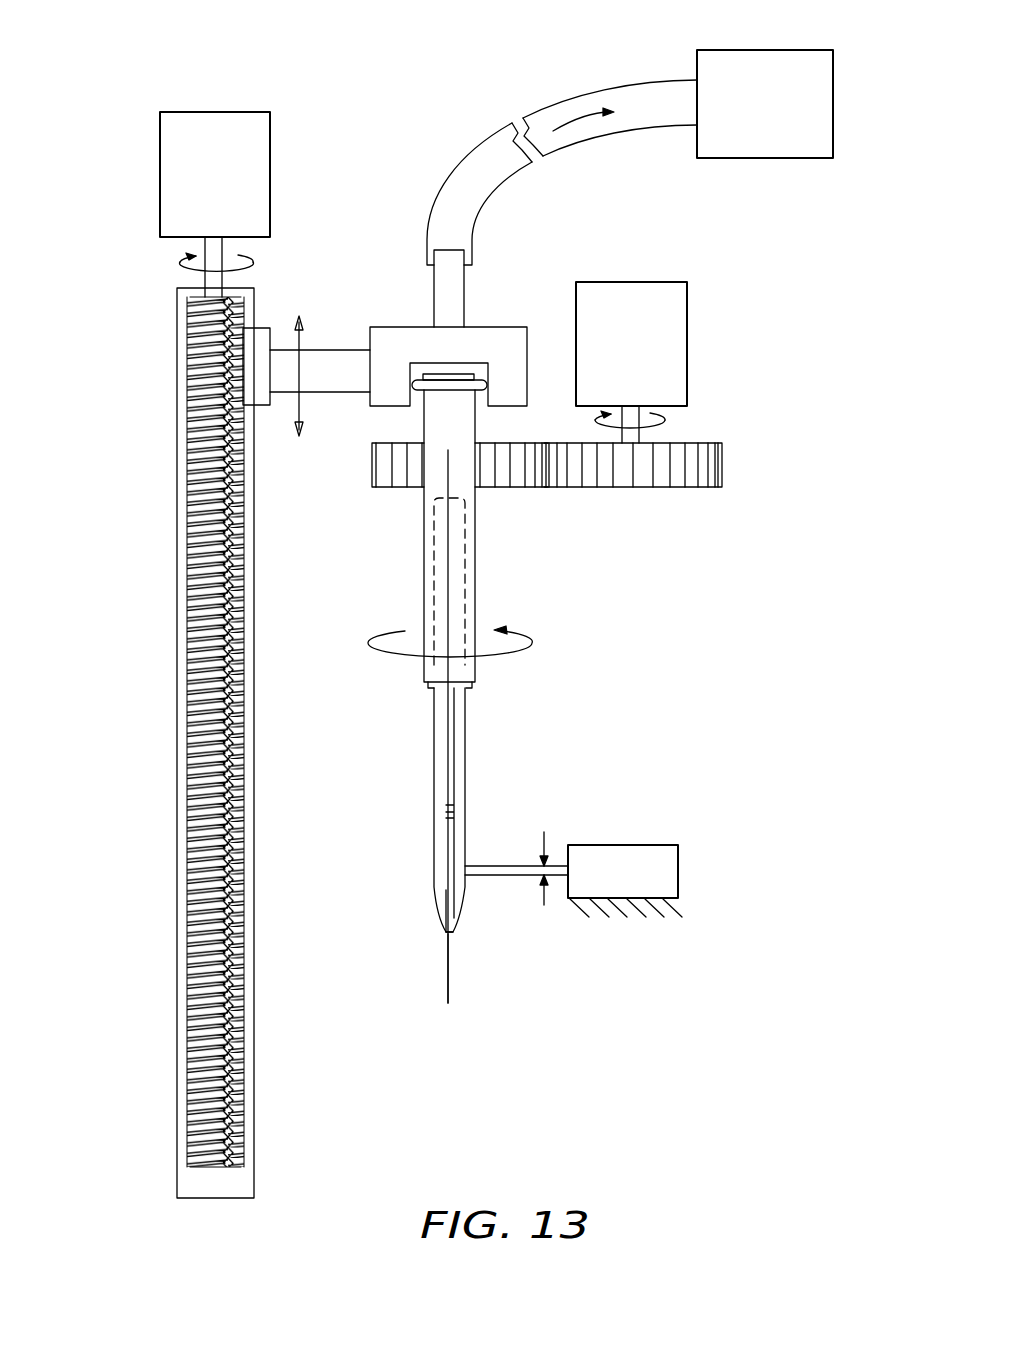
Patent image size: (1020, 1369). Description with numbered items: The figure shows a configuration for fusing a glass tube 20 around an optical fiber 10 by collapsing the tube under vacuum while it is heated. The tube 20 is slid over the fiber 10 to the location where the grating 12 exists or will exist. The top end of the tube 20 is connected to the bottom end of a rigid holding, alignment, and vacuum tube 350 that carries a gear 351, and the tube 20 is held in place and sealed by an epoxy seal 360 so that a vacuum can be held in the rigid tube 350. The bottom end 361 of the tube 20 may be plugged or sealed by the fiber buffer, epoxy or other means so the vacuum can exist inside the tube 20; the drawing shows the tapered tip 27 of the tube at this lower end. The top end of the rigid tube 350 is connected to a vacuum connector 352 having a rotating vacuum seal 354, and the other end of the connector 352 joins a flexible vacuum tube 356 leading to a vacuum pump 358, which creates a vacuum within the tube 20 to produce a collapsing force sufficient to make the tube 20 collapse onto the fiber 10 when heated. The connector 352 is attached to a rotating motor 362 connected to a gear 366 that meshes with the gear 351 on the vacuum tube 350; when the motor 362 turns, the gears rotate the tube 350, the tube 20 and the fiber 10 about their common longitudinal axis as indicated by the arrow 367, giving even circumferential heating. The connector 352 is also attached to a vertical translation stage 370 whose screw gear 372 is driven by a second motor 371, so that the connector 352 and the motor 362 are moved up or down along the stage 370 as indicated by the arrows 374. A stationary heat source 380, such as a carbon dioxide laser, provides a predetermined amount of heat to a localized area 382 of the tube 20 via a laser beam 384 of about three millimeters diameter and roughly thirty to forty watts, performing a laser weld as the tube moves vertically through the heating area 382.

The fiber 10 is at (450, 548).
The grating 12 is at (452, 793).
The tube 20 is at (401, 810).
The ferrule tip 27 is at (460, 900).
The rigid holding, alignment, and vacuum tube 350 is at (426, 570).
The gear 351 is at (372, 478).
The vacuum connector 352 is at (510, 328).
The rotating vacuum seal 354 is at (440, 385).
The flexible vacuum tube 356 is at (470, 168).
The vacuum pump 358 is at (757, 55).
The epoxy seal 360 is at (470, 688).
The bottom end 361 is at (448, 934).
The rotating motor 362 is at (665, 290).
The gear 366 is at (590, 487).
The arrow 367 is at (527, 642).
The vertical translation stage 370 is at (158, 738).
The second motor 371 is at (186, 115).
The screw gear 372 is at (193, 423).
The arrows 374 is at (302, 363).
The stationary heat source 380 is at (638, 838).
The localized area 382 is at (378, 885).
The laser beam 384 is at (555, 878).